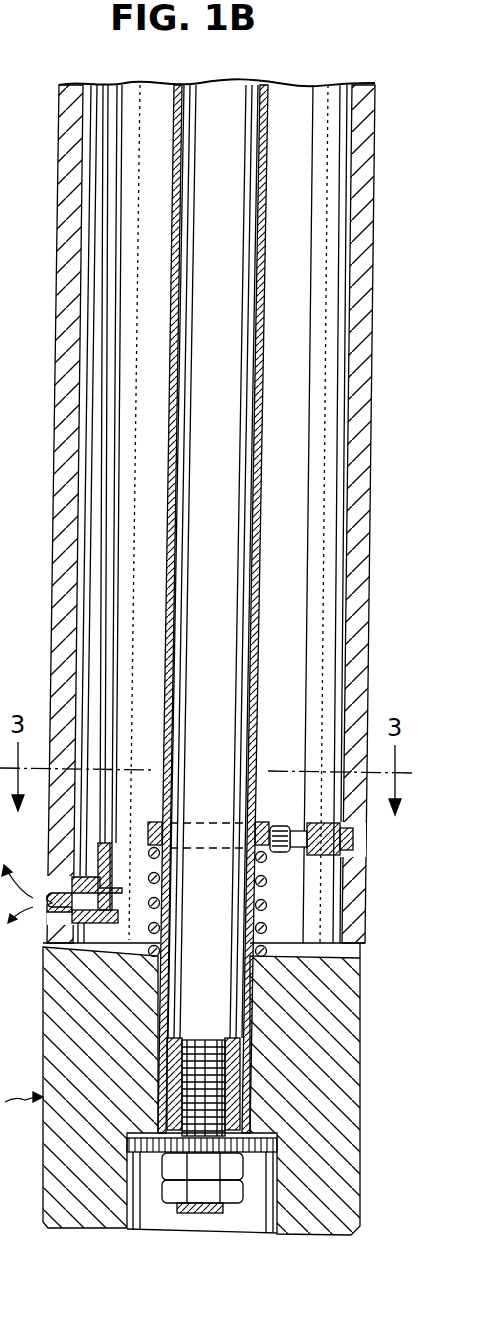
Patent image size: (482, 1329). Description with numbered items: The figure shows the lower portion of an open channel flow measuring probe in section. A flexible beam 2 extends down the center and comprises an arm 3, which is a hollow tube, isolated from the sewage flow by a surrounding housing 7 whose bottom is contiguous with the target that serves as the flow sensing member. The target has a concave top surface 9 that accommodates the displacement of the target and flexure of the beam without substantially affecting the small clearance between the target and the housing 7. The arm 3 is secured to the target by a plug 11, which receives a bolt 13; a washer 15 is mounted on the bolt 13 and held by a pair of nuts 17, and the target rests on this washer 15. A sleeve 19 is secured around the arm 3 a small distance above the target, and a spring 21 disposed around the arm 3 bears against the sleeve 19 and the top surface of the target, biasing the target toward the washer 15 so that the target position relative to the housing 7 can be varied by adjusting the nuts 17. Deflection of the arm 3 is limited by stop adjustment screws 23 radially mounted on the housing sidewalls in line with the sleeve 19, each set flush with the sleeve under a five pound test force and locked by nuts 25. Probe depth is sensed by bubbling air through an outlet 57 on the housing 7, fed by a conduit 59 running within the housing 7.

The flexible beam 2 is at (268, 388).
The arm 3 is at (262, 668).
The housing 7 is at (63, 617).
The top surface 9 is at (308, 945).
The plug 11 is at (241, 1070).
The bolt 13 is at (199, 1038).
The washer 15 is at (280, 1146).
The nuts 17 is at (205, 1192).
The sleeve 19 is at (148, 822).
The spring 21 is at (267, 906).
The screws 23 is at (280, 826).
The nuts 25 is at (318, 823).
The outlet 57 is at (47, 905).
The conduit 59 is at (106, 575).